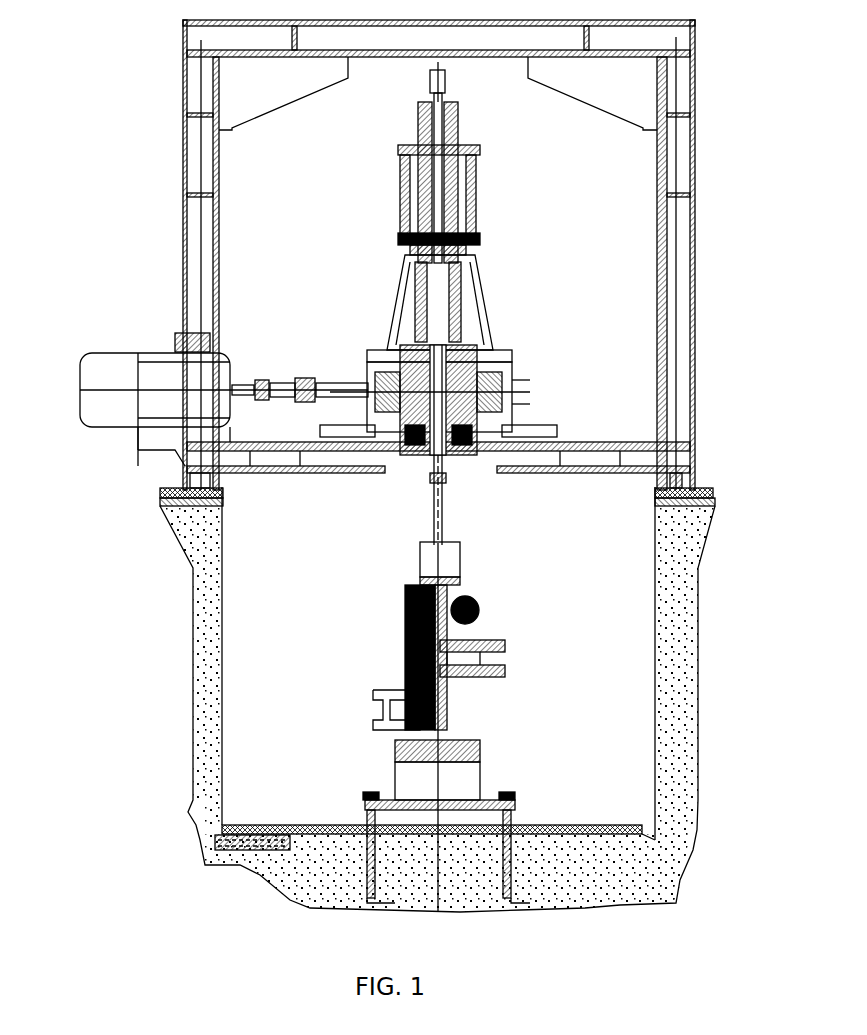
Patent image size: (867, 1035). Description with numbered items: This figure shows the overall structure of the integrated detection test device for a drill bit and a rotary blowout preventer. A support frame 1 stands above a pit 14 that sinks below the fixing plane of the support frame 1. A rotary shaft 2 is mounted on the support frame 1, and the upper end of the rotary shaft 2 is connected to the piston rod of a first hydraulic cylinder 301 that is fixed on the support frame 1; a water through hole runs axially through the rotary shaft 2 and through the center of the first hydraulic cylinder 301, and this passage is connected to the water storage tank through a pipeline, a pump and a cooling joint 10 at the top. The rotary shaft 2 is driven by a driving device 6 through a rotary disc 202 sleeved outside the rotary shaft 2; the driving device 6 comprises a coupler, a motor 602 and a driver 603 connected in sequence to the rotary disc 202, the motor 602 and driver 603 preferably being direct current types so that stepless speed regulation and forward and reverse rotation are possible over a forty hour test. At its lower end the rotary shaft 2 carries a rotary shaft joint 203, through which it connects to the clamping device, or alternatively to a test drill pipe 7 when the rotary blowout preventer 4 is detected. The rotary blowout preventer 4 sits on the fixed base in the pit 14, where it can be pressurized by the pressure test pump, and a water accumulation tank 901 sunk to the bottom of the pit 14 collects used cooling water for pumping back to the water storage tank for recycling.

The support frame 1 is at (690, 213).
The rotary shaft 2 is at (435, 333).
The rotary blowout preventer 4 is at (400, 665).
The driving device 6 is at (167, 350).
The test drill pipe 7 is at (455, 532).
The cooling joint 10 is at (445, 88).
The pit 14 is at (632, 683).
The rotary disc 202 is at (478, 427).
The rotary shaft joint 203 is at (430, 478).
The first hydraulic cylinder 301 is at (408, 208).
The motor 602 is at (105, 375).
The driver 603 is at (172, 333).
The water accumulation tank 901 is at (212, 838).